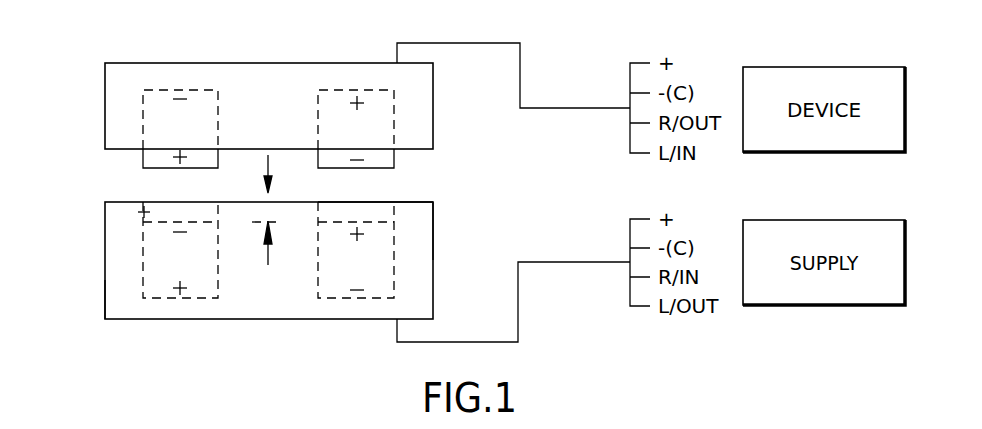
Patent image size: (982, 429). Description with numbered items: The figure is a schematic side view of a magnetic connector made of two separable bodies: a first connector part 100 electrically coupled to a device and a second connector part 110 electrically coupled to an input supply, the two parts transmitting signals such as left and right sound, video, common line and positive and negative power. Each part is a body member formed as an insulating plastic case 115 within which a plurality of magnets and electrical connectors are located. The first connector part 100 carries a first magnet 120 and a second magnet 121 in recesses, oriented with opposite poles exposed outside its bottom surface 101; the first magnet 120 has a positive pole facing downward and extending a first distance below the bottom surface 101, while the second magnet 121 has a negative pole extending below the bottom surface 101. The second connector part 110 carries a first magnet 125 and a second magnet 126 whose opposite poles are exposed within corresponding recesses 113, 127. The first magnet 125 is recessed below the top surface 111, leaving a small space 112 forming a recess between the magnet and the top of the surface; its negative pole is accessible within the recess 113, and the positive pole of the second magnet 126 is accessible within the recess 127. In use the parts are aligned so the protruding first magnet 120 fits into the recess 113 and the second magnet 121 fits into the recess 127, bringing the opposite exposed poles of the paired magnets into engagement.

The first connector part 100 is at (105, 79).
The bottom surface 101 is at (161, 174).
The second connector part 110 is at (105, 260).
The top surface 111 is at (422, 201).
The space 112 is at (280, 212).
The recess 113 is at (140, 211).
The case 115 is at (105, 289).
The first magnet 120 is at (155, 90).
The second magnet 121 is at (394, 98).
The first magnet 125 is at (169, 302).
The second magnet 126 is at (364, 302).
The recess 127 is at (405, 213).